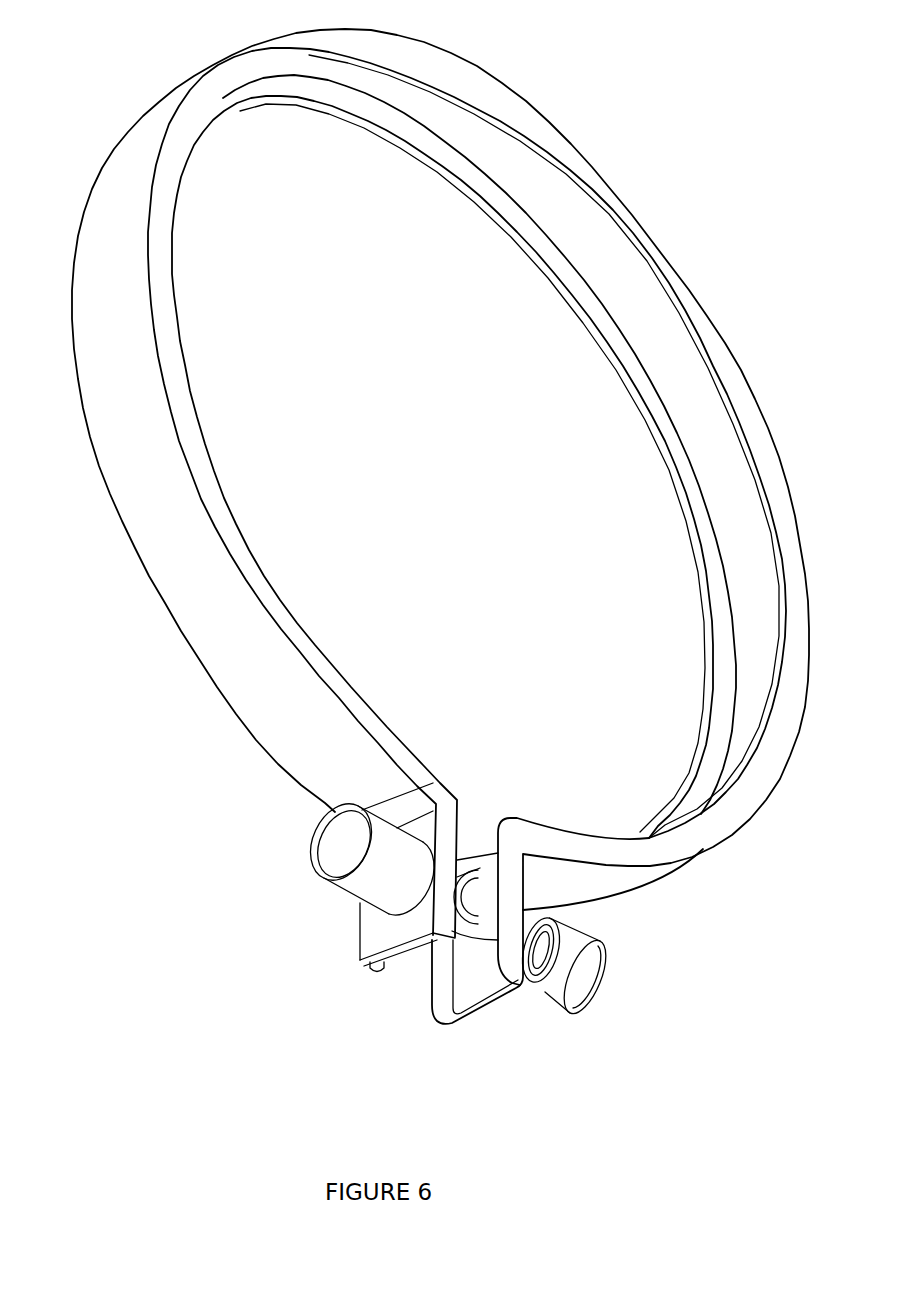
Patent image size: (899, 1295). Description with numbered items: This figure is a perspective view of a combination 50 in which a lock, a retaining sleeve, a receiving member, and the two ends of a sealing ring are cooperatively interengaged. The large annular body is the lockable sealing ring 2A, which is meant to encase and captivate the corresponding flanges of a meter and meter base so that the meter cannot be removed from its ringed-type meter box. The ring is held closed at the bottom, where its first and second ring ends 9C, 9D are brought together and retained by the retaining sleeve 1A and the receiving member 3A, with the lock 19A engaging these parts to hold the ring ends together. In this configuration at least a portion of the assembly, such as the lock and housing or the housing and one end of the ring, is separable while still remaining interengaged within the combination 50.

The combination 50 is at (742, 156).
The clamp band 2A is at (557, 148).
The band end / fastener 1A is at (480, 900).
The bolt 3A is at (333, 855).
The bracket plate 9D is at (377, 947).
The bracket channel 9C is at (470, 997).
The nut 19A is at (582, 1020).